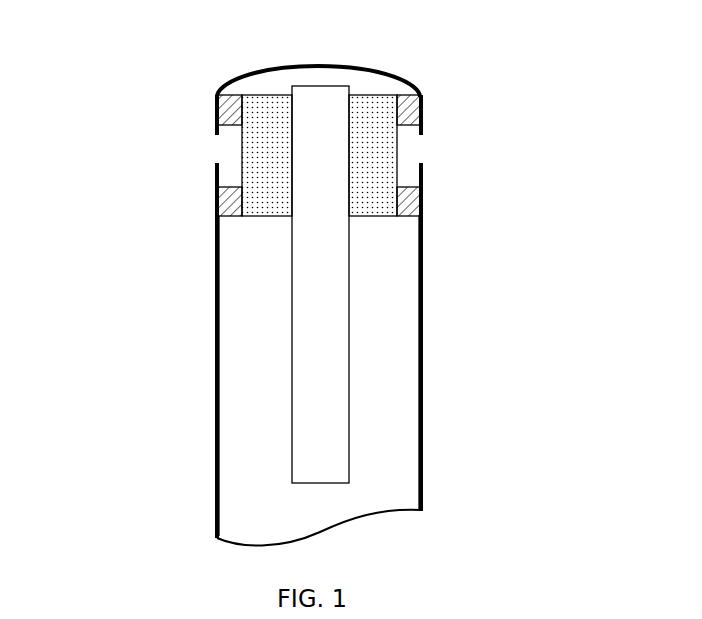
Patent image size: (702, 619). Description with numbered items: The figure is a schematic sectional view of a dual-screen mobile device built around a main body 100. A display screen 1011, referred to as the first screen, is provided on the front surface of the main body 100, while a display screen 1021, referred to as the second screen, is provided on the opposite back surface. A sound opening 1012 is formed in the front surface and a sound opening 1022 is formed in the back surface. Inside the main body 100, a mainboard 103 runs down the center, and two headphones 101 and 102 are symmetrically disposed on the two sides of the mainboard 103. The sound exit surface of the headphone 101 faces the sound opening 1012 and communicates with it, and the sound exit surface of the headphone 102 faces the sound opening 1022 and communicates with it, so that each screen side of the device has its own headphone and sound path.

The main body 100 is at (320, 66).
The headphone 101 is at (373, 119).
The headphone 102 is at (261, 119).
The mainboard 103 is at (307, 308).
The display screen 1011 is at (422, 241).
The sound opening 1012 is at (421, 151).
The display screen 1021 is at (218, 258).
The sound opening 1022 is at (219, 151).